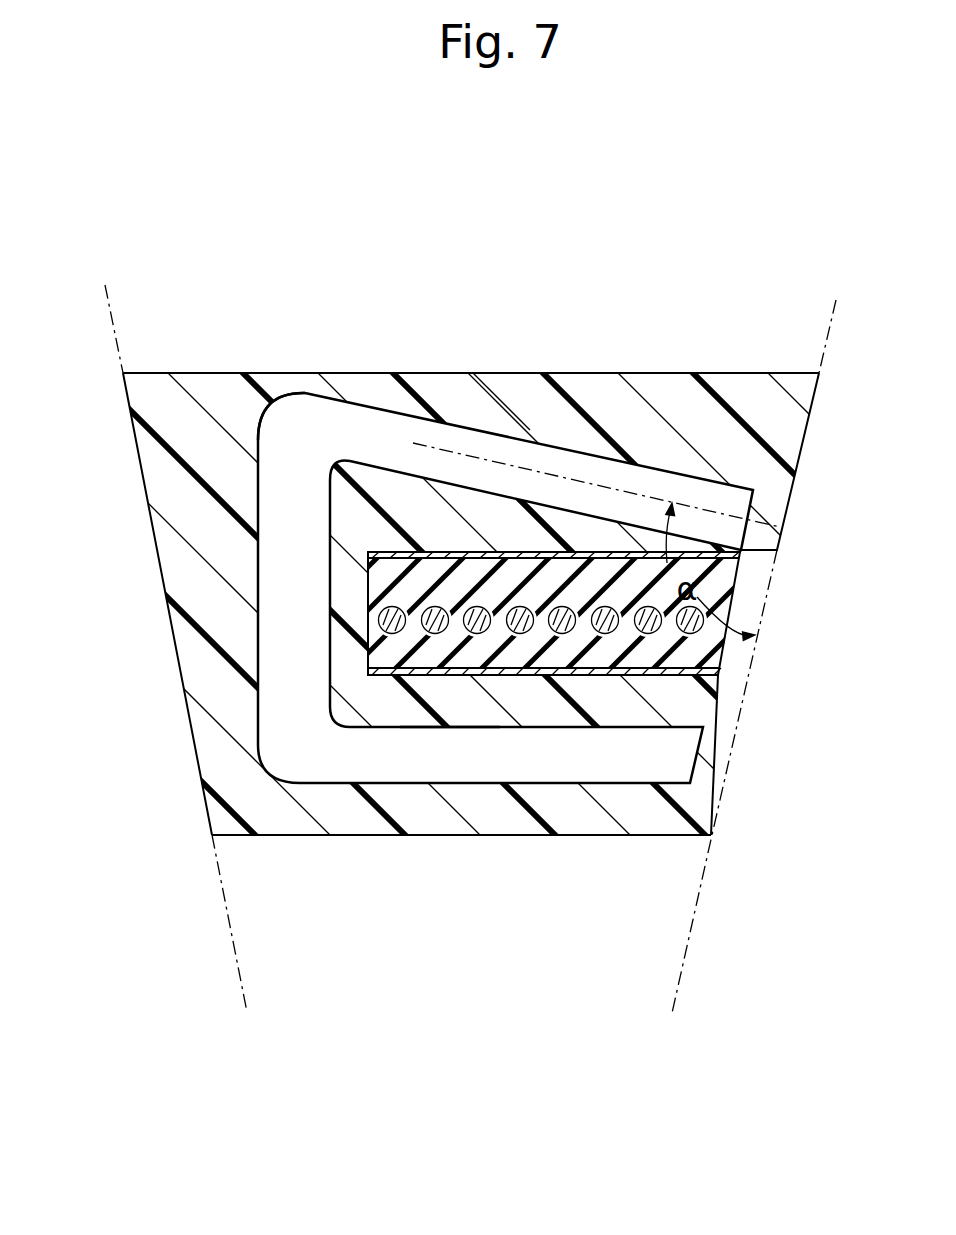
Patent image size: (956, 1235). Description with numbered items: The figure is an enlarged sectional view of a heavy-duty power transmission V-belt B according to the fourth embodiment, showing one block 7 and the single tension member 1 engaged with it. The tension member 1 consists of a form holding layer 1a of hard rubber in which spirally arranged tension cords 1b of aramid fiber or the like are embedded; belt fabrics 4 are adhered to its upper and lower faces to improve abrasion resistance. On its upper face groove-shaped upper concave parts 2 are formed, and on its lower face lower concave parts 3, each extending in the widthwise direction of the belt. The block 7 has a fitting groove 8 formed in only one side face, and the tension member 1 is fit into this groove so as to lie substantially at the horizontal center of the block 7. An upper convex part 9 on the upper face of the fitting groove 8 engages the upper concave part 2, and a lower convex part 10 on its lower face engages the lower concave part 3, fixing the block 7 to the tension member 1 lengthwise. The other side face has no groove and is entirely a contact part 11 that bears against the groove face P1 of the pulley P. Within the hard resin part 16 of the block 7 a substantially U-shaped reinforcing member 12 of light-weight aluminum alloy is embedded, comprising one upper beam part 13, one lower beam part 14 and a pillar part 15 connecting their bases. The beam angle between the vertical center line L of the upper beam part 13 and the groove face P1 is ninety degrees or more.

The tension member 1 is at (535, 753).
The form holding layer 1a is at (368, 588).
The tension cords 1b is at (670, 633).
The upper concave part 2 is at (405, 548).
The lower concave part 3 is at (445, 727).
The belt fabric 4 is at (368, 553).
The block 7 is at (435, 360).
The fitting groove 8 is at (368, 657).
The upper convex part 9 is at (607, 552).
The lower convex part 10 is at (542, 670).
The contact part 11 is at (145, 485).
The reinforcing member 12 is at (322, 392).
The upper beam part 13 is at (500, 430).
The lower beam part 14 is at (317, 767).
The pillar part 15 is at (250, 464).
The resin part 16 is at (547, 395).
The heavy-duty power transmission V-belt B is at (182, 373).
The vertical center line L is at (708, 492).
The pulley P is at (823, 302).
The groove face P1 is at (243, 980).